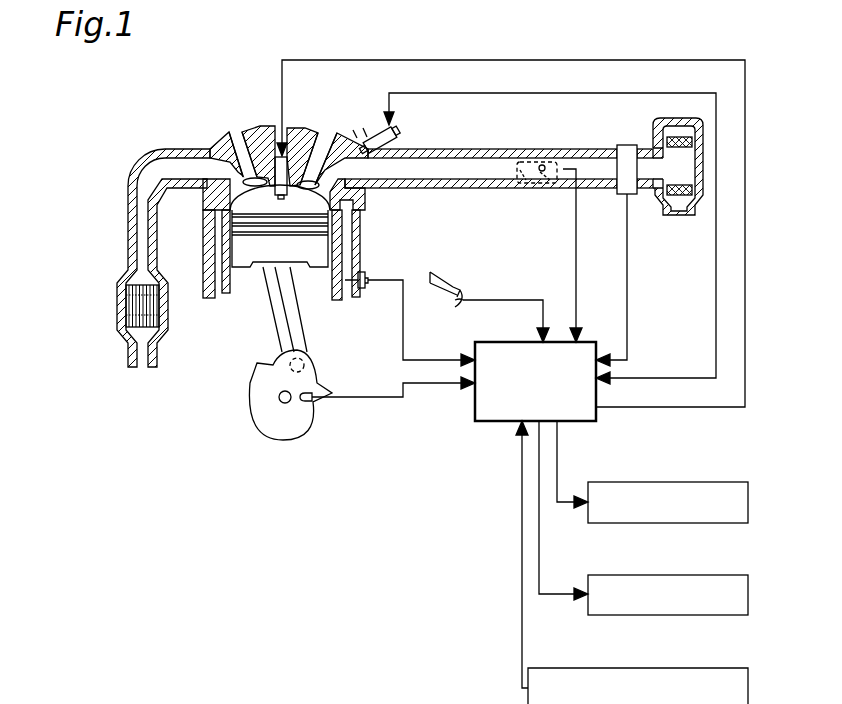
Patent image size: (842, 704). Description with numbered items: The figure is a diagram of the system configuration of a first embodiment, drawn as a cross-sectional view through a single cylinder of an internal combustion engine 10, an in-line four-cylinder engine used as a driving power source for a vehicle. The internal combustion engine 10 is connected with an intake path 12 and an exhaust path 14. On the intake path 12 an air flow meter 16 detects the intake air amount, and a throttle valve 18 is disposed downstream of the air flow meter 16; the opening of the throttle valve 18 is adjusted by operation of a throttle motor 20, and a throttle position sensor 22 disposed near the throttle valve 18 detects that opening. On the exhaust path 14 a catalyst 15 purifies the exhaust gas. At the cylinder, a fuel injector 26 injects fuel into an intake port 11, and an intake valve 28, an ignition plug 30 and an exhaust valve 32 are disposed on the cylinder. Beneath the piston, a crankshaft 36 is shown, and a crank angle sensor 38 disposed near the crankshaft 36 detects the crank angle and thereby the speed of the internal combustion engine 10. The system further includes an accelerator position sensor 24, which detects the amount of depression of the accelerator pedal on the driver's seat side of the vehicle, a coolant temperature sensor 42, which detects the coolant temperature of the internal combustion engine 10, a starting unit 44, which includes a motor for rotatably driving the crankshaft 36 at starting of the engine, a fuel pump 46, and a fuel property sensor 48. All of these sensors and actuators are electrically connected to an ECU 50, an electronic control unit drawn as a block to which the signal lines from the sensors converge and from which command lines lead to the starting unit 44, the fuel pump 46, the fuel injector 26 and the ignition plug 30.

The internal combustion engine 10 is at (370, 245).
The intake port 11 is at (355, 172).
The intake path 12 is at (480, 140).
The exhaust path 14 is at (115, 182).
The catalyst 15 is at (133, 300).
The air flow meter 16 is at (626, 150).
The throttle valve 18 is at (543, 165).
The throttle motor 20 is at (518, 188).
The throttle position sensor 22 is at (557, 183).
The accelerator position sensor 24 is at (470, 290).
The fuel injector 26 is at (398, 131).
The intake valve 28 is at (343, 130).
The ignition plug 30 is at (303, 133).
The exhaust valve 32 is at (210, 147).
The crankshaft 36 is at (285, 404).
The crank angle sensor 38 is at (305, 403).
The coolant temperature sensor 42 is at (365, 292).
The starting unit 44 is at (705, 482).
The fuel pump 46 is at (705, 575).
The fuel property sensor 48 is at (705, 668).
The ECU 50 is at (482, 421).